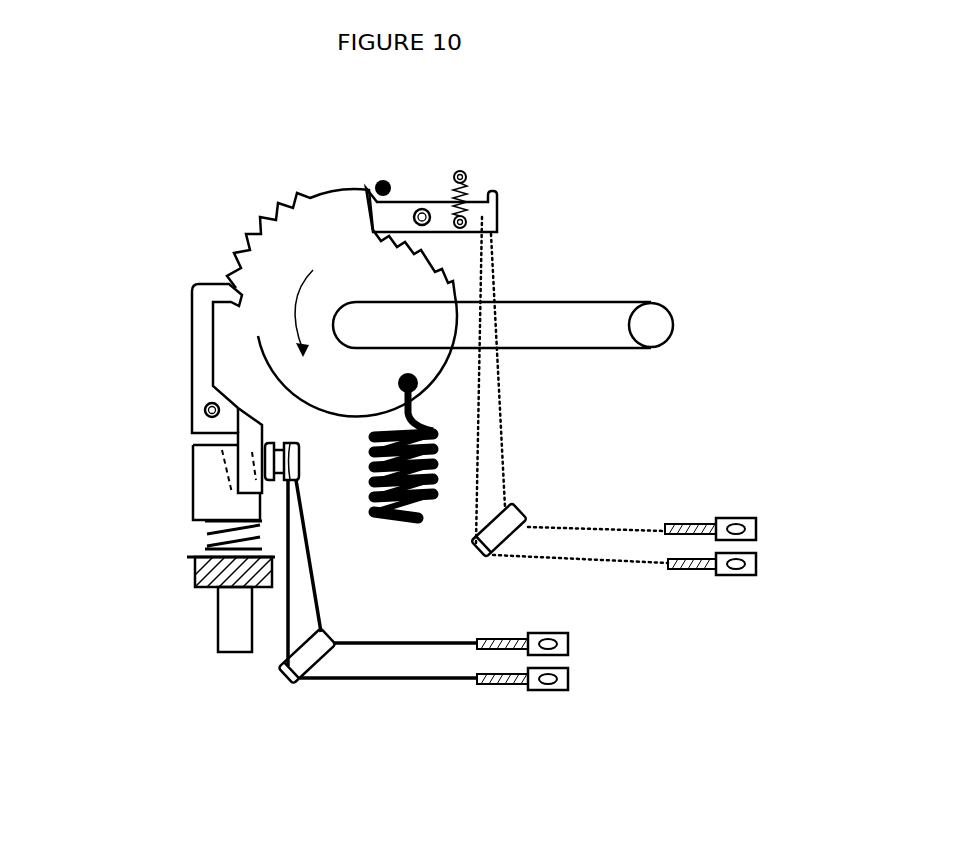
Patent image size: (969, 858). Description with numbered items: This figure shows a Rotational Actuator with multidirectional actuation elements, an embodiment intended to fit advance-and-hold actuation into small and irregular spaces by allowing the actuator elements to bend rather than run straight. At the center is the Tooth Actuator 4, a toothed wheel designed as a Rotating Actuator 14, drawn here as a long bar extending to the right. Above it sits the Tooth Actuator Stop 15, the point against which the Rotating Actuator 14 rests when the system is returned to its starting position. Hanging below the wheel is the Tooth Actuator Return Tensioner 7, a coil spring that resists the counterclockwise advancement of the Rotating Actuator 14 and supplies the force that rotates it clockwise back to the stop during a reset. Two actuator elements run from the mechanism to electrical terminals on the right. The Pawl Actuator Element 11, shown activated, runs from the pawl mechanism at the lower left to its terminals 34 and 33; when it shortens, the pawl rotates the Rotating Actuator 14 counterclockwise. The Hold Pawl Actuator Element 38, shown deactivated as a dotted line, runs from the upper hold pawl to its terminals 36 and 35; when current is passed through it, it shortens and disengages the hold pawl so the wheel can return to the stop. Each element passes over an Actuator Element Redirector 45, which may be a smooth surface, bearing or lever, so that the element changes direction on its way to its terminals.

The Tooth Actuator 4 is at (294, 274).
The Tooth Actuator Stop 15 is at (378, 180).
The Rotating Actuator 14 is at (503, 325).
The Tooth Actuator Return Tensioner 7 is at (388, 520).
The Actuator Element Redirector 45 is at (510, 518).
The Hold Pawl Actuator Element 38 is at (622, 530).
The Hold Pawl Actuator Element N2- terminal 36 is at (728, 518).
The Hold Pawl Actuator Element N2+ terminal 35 is at (737, 577).
The Pawl Actuator Element 11 is at (427, 616).
The Pawl Actuator Element N2- terminal 34 is at (553, 636).
The Pawl Actuator Element N2+ terminal 33 is at (567, 692).